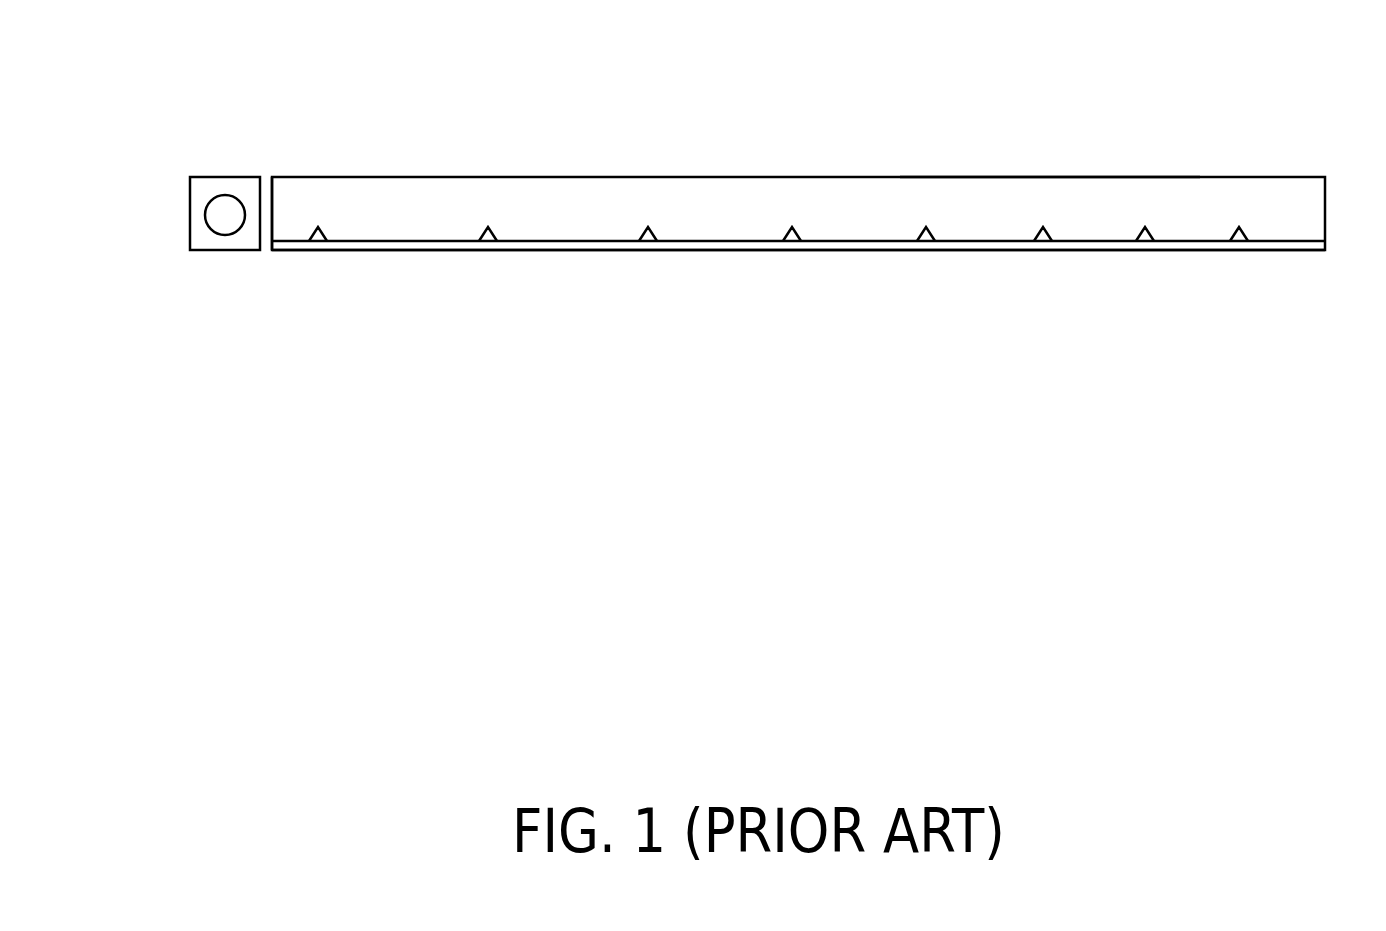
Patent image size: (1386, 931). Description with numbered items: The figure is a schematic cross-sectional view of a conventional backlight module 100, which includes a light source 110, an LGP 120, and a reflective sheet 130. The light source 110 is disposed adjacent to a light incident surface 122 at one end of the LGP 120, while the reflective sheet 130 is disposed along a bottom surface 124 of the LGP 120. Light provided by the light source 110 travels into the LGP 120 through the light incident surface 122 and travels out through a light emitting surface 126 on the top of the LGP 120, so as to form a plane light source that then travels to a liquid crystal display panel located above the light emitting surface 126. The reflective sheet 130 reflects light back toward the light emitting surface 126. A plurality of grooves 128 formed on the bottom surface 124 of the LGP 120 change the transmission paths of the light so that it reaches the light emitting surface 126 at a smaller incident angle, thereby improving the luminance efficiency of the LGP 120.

The backlight module 100 is at (1378, 562).
The light source 110 is at (190, 228).
The LGP 120 is at (748, 183).
The light incident surface 122 is at (272, 217).
The bottom surface 124 is at (720, 243).
The light emitting surface 126 is at (1040, 177).
The grooves 128 is at (1048, 245).
The reflective sheet 130 is at (927, 245).